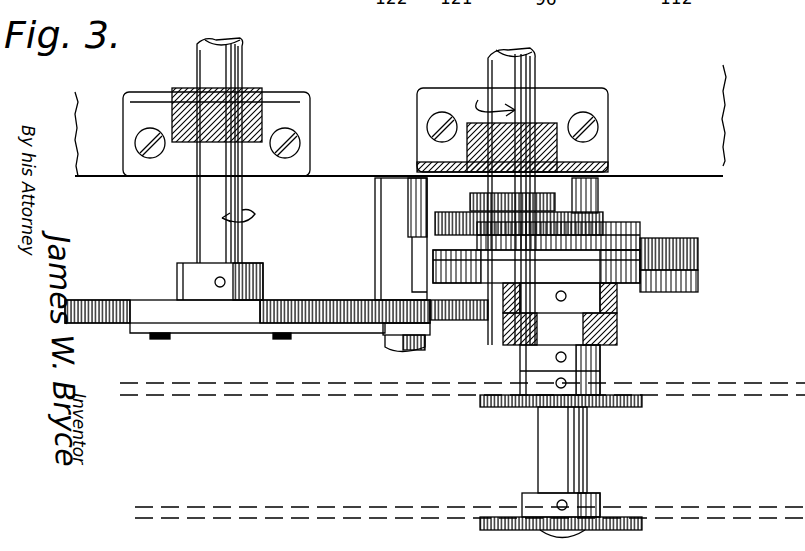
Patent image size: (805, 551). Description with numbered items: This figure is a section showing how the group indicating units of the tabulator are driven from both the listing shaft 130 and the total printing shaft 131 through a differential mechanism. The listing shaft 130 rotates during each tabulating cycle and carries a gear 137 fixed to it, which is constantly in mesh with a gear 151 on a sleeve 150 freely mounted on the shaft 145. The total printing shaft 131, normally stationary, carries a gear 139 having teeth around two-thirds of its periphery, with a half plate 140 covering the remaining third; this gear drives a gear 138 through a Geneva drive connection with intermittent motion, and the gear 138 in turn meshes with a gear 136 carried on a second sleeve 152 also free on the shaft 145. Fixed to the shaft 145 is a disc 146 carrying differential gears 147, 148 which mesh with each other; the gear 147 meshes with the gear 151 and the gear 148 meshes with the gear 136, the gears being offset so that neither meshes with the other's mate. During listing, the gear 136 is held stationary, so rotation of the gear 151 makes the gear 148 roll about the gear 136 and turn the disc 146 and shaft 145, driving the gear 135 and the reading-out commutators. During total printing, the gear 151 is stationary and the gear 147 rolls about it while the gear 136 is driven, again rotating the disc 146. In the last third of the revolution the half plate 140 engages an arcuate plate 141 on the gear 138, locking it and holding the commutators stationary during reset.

The listing shaft 130 is at (537, 80).
The total printing shaft 131 is at (244, 62).
The gear 135 is at (630, 405).
The gear 136 is at (640, 302).
The gear 137 is at (450, 210).
The gear 138 is at (448, 318).
The gear 139 is at (290, 301).
The half plate 140 is at (231, 333).
The arcuate plate 141 is at (382, 328).
The shaft 145 is at (546, 453).
The disc 146 is at (570, 268).
The differential gear 147 is at (698, 243).
The differential gear 148 is at (698, 285).
The sleeve 150 is at (596, 198).
The gear 151 is at (640, 225).
The second sleeve 152 is at (510, 346).